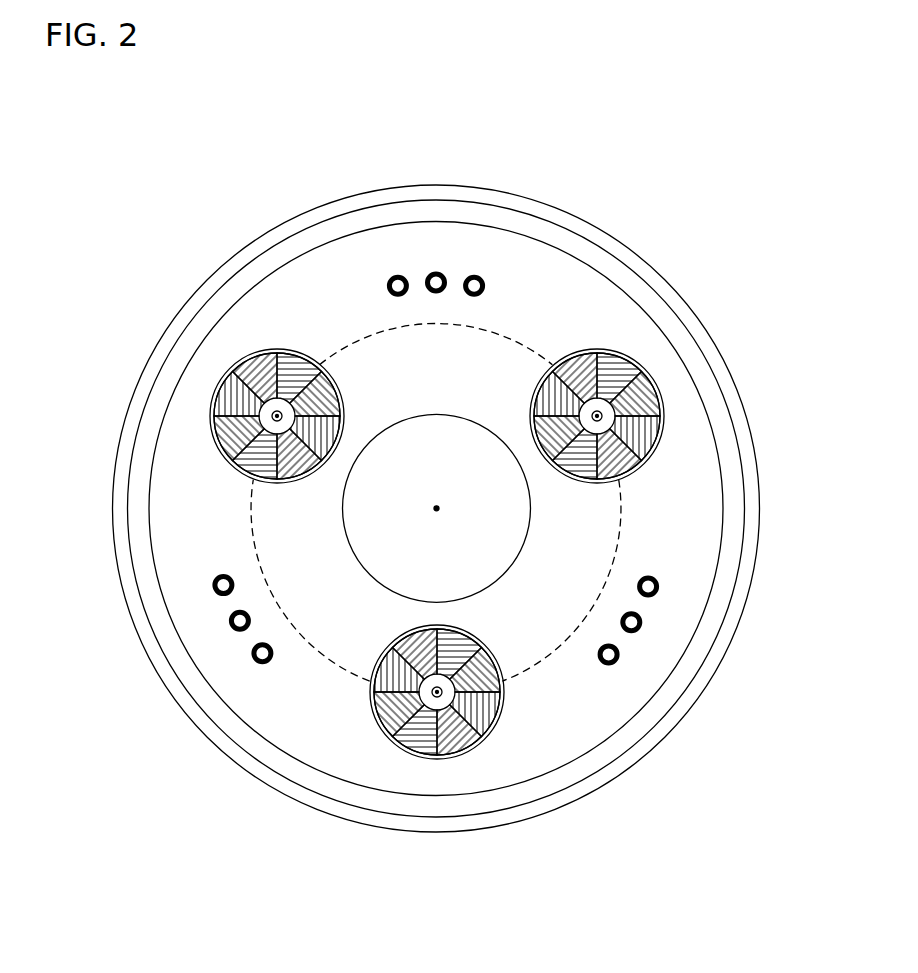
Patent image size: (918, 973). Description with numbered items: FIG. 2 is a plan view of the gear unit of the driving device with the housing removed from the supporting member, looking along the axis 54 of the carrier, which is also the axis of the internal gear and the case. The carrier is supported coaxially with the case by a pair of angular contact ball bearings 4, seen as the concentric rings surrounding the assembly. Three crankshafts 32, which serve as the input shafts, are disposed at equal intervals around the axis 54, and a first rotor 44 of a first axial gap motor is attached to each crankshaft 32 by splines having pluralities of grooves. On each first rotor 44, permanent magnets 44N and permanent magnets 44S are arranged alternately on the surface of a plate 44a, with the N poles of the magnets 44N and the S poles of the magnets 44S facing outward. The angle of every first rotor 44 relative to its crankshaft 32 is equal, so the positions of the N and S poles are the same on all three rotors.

The angular contact ball bearings 4 is at (686, 604).
The axis 54 is at (435, 508).
The first rotor 44 is at (200, 379).
The plate 44a is at (213, 403).
The permanent magnet (N pole) 44N is at (318, 430).
The permanent magnet (S pole) 44S is at (316, 400).
The crankshaft 32 is at (274, 413).